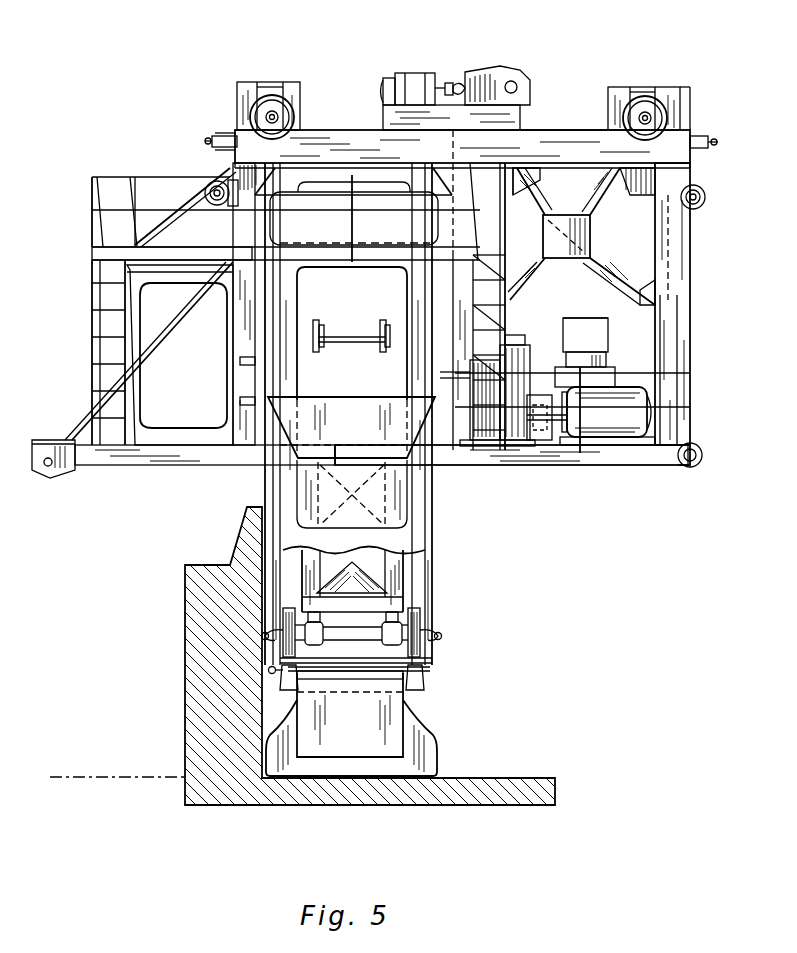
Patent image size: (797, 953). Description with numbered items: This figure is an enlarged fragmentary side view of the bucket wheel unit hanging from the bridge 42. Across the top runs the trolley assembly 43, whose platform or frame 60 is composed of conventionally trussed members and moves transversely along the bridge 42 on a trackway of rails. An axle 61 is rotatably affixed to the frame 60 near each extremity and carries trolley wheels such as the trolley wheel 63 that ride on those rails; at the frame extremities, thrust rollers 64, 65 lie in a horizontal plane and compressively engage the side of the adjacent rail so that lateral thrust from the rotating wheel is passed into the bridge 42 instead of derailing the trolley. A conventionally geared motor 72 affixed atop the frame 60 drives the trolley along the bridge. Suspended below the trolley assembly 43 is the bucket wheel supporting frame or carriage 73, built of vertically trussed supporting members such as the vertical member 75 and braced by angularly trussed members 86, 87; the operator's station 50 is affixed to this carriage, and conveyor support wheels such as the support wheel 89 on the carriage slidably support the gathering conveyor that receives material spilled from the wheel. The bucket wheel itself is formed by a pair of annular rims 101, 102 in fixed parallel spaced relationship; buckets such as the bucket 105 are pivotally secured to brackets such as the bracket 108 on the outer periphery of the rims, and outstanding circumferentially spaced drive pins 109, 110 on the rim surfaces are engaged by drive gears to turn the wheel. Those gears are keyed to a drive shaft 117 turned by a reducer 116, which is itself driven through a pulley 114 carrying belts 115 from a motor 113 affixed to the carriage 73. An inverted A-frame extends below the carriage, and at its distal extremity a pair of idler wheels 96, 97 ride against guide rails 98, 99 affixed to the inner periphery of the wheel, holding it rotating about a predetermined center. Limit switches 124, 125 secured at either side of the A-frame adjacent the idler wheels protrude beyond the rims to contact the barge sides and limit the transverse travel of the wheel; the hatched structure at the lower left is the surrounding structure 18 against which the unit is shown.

The foundation pit wall 18 is at (195, 681).
The bridge 42 is at (680, 87).
The trolley assembly 43 is at (560, 130).
The operator's station 50 is at (175, 438).
The trolley frame 60 is at (462, 149).
The axle 61 is at (272, 112).
The trolley wheel 63 is at (646, 90).
The thrust roller 64 is at (700, 140).
The thrust roller 65 is at (212, 140).
The motor 72 is at (487, 66).
The bucket wheel supporting frame 73 is at (590, 470).
The vertical member 75 is at (682, 255).
The angularly trussed member 86 is at (602, 266).
The angularly trussed member 87 is at (590, 215).
The conveyor support wheel 89 is at (700, 452).
The idler wheel 96 is at (418, 615).
The idler wheel 97 is at (290, 633).
The guide rail 98 is at (430, 661).
The guide rail 99 is at (300, 652).
The annular rim 101 is at (432, 518).
The annular rim 102 is at (272, 478).
The bucket 105 is at (418, 748).
The bracket 108 is at (420, 688).
The drive pin 109 is at (428, 666).
The drive pin 110 is at (270, 670).
The motor 113 is at (607, 416).
The pulley 114 is at (470, 412).
The belts 115 is at (487, 412).
The reducer 116 is at (602, 365).
The drive shaft 117 is at (455, 375).
The limit switch 124 is at (445, 628).
The limit switch 125 is at (262, 632).